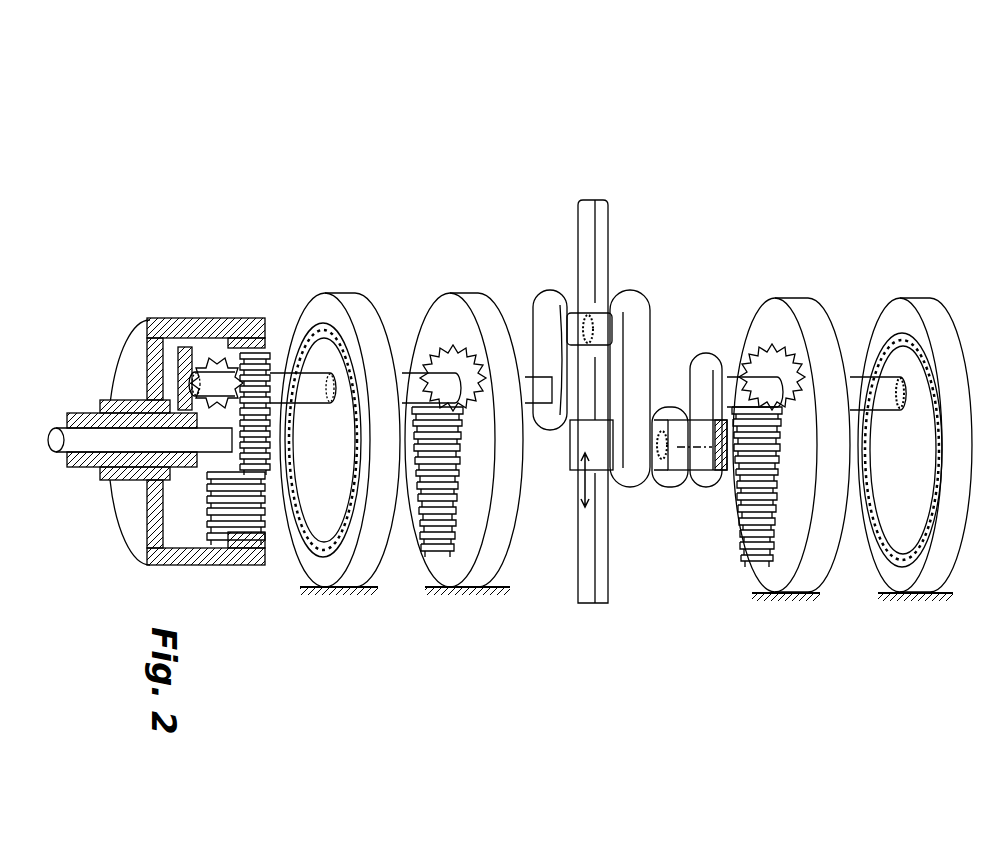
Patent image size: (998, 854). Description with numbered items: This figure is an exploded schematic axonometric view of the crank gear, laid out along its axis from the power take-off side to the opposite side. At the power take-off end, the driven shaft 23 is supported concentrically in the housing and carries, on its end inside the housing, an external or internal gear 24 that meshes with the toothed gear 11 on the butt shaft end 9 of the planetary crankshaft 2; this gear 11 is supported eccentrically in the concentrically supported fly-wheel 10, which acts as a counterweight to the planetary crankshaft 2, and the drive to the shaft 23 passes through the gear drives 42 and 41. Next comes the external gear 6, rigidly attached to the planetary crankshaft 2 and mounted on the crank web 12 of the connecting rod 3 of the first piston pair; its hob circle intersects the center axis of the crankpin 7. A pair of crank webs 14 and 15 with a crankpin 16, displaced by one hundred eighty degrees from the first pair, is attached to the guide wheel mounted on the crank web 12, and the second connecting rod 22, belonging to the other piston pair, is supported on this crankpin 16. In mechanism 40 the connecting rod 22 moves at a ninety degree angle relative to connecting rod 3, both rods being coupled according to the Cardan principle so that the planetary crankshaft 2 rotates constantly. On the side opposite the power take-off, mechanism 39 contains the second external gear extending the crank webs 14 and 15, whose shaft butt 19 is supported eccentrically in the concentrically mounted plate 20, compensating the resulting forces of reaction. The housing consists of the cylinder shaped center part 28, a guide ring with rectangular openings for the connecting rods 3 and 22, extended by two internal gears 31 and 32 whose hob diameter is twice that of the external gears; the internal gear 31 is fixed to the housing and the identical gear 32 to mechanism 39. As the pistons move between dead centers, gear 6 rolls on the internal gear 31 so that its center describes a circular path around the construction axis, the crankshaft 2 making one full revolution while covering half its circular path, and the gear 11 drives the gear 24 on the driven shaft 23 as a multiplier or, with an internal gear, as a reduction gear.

The planetary crankshaft 2 is at (500, 593).
The connecting rod 3 is at (587, 280).
The external gear 6 is at (437, 337).
The crankpin 7 is at (580, 328).
The butt shaft end 9 is at (305, 390).
The fly-wheel 10 is at (320, 352).
The gear 11 is at (227, 343).
The crank web 12 is at (630, 363).
The crank web 14 is at (625, 462).
The crank web 15 is at (697, 483).
The crankpin 16 is at (657, 450).
The shaft butt 19 is at (870, 400).
The plate 20 is at (900, 360).
The connecting rod 22 is at (688, 362).
The driven shaft 23 is at (153, 435).
The gear 24 is at (207, 390).
The cylinder shaped center part 28 is at (420, 570).
The internal gear 31 is at (450, 577).
The internal gear 32 is at (763, 573).
The mechanism 39 is at (860, 347).
The mechanism 40 is at (660, 412).
The gear drive 41 is at (258, 410).
The gear drive 42 is at (258, 410).